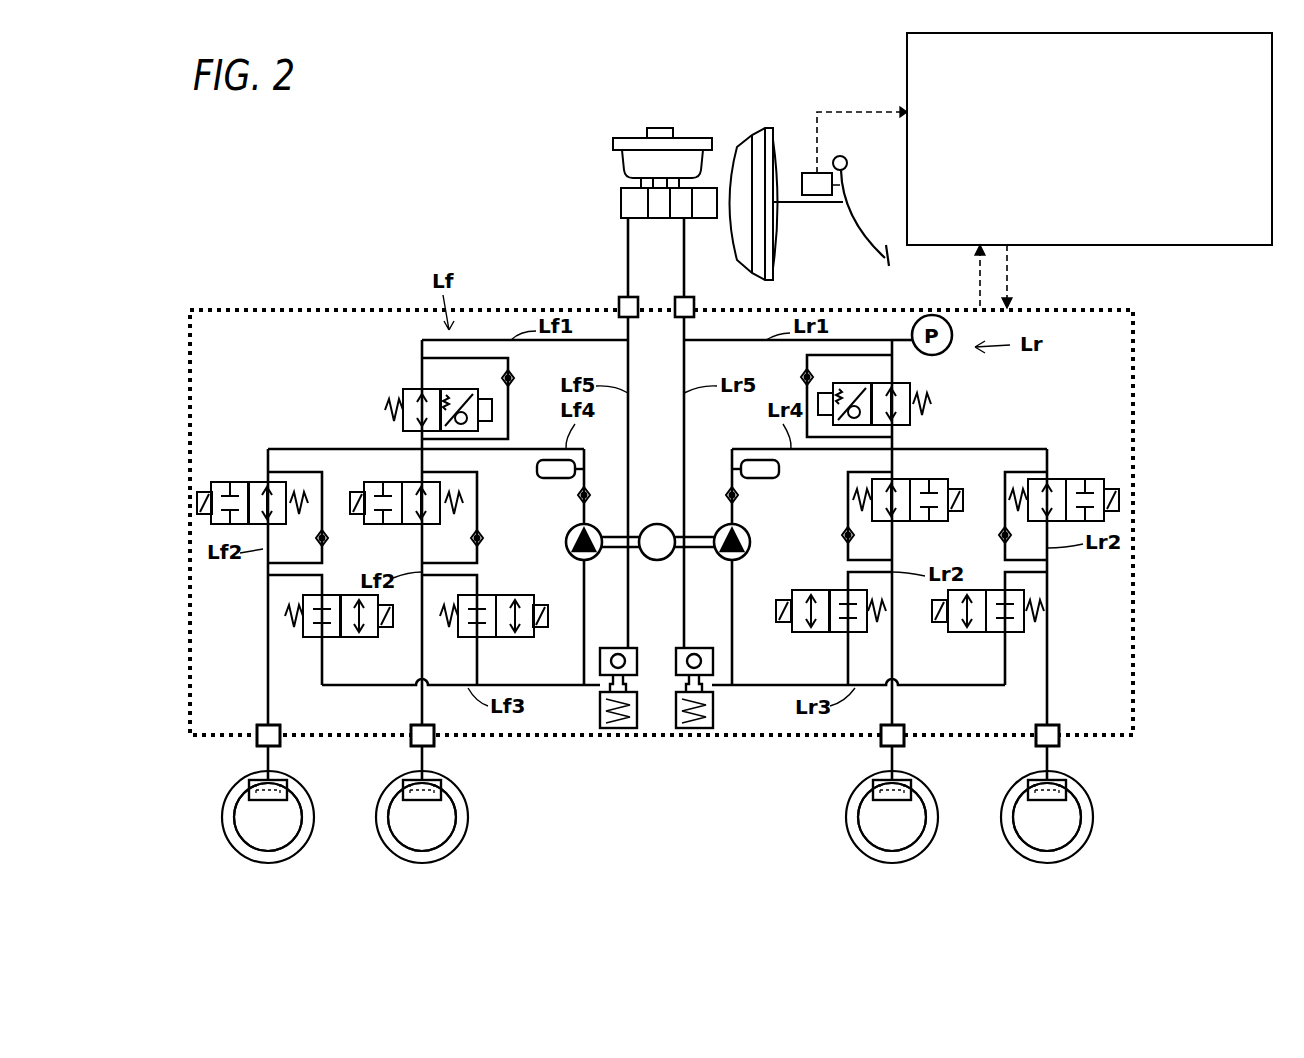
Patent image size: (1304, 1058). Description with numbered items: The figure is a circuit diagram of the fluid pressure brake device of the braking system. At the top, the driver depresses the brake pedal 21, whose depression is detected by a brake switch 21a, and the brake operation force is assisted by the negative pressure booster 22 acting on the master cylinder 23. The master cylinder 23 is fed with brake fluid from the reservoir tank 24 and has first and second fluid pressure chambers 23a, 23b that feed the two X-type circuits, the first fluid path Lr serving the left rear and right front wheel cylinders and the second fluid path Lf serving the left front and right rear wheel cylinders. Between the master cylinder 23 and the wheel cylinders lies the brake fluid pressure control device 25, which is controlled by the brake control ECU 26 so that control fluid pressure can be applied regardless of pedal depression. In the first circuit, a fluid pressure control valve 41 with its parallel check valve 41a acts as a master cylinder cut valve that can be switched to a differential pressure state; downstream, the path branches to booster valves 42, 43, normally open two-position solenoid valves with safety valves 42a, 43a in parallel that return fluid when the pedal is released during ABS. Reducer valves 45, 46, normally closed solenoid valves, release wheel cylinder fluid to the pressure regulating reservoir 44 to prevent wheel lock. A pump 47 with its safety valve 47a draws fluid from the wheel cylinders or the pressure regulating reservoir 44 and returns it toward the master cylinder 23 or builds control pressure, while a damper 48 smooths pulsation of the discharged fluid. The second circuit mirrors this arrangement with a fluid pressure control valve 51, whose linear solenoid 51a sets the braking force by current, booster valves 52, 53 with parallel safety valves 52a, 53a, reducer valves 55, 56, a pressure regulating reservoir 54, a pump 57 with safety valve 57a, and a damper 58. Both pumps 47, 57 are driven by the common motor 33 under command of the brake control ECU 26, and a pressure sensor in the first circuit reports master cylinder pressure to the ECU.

The brake pedal 21 is at (831, 211).
The brake switch 21a is at (814, 200).
The negative pressure booster 22 is at (751, 128).
The master cylinder 23 is at (637, 208).
The first fluid pressure chamber 23a is at (680, 212).
The second fluid pressure chamber 23b is at (633, 206).
The reservoir tank 24 is at (652, 128).
The brake fluid pressure control device 25 is at (1070, 308).
The brake control ECU 26 is at (907, 50).
The motor 33 is at (655, 524).
The fluid pressure control valve 41 is at (880, 375).
The check valve 41a is at (834, 400).
The booster valve 42 is at (913, 482).
The safety valve 42a is at (843, 537).
The booster valve 43 is at (1075, 480).
The safety valve 43a is at (1000, 537).
The pressure regulating reservoir 44 is at (694, 730).
The reducer valve 45 is at (826, 634).
The reducer valve 46 is at (987, 634).
The pump 47 is at (763, 522).
The safety valve 47a is at (741, 495).
The damper 48 is at (779, 470).
The fluid pressure control valve 51 is at (438, 376).
The linear solenoid 51a is at (491, 400).
The booster valve 52 is at (248, 482).
The safety valve 52a is at (330, 540).
The booster valve 53 is at (386, 482).
The safety valve 53a is at (484, 538).
The pressure regulating reservoir 54 is at (616, 730).
The reducer valve 55 is at (341, 638).
The reducer valve 56 is at (496, 638).
The pump 57 is at (557, 532).
The safety valve 57a is at (577, 495).
The damper 58 is at (537, 470).